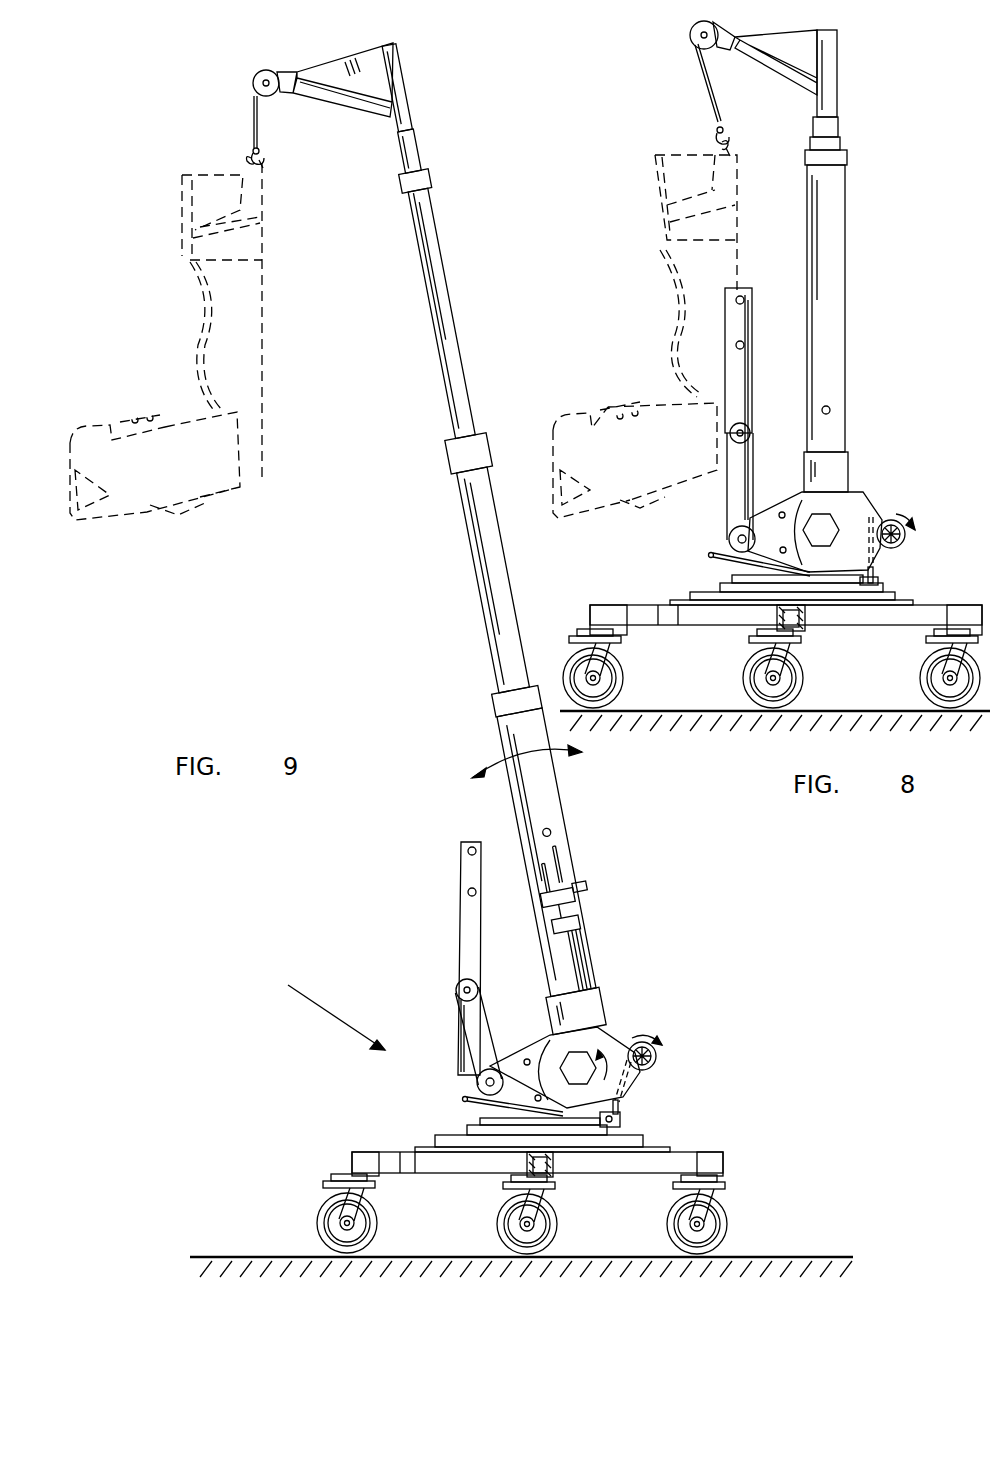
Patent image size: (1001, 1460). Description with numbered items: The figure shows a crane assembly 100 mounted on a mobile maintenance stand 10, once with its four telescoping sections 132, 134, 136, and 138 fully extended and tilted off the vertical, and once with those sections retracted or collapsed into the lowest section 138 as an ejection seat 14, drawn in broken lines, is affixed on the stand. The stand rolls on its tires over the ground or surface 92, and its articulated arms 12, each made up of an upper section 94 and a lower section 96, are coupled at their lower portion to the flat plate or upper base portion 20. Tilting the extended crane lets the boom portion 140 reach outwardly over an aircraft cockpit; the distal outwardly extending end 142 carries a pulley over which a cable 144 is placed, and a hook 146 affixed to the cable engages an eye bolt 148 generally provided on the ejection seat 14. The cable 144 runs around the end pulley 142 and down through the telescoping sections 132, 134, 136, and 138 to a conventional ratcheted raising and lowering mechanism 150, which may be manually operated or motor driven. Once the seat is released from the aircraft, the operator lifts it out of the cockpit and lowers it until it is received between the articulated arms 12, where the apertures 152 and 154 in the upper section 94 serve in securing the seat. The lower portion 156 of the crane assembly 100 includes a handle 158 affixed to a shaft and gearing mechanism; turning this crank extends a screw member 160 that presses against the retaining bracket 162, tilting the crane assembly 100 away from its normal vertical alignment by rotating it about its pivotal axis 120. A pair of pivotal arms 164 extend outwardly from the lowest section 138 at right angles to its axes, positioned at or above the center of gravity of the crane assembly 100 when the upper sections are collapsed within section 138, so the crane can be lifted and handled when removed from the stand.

In FIG. 8, the mobile maintenance stand 10 is at (685, 578).
In FIG. 9, the articulated arms 12 is at (443, 957).
In FIG. 8, the articulated arms 12 is at (762, 395).
In FIG. 9, the ejection seat 14 is at (240, 380).
In FIG. 8, the ejection seat 14 is at (680, 350).
In FIG. 9, the upper base portion 20 is at (440, 1147).
In FIG. 9, the ground or surface 92 is at (362, 1262).
In FIG. 8, the ground or surface 92 is at (698, 714).
In FIG. 9, the upper section 94 is at (462, 873).
In FIG. 8, the upper section 94 is at (752, 322).
In FIG. 9, the lower section 96 is at (455, 965).
In FIG. 8, the lower section 96 is at (752, 420).
In FIG. 9, the crane assembly 100 is at (482, 667).
In FIG. 8, the crane assembly 100 is at (862, 481).
In FIG. 9, the pivotal axis 120 is at (477, 1082).
In FIG. 8, the pivotal axis 120 is at (742, 539).
In FIG. 9, the telescoping section 132 is at (404, 103).
In FIG. 8, the telescoping section 132 is at (832, 70).
In FIG. 9, the telescoping section 134 is at (424, 258).
In FIG. 8, the telescoping section 134 is at (840, 127).
In FIG. 9, the telescoping section 136 is at (480, 535).
In FIG. 8, the telescoping section 136 is at (845, 150).
In FIG. 9, the lowest section 138 is at (548, 802).
In FIG. 8, the lowest section 138 is at (838, 220).
In FIG. 9, the boom portion 140 is at (328, 58).
In FIG. 8, the boom portion 140 is at (788, 45).
In FIG. 9, the end pulley 142 is at (256, 80).
In FIG. 8, the end pulley 142 is at (696, 44).
In FIG. 9, the cable 144 is at (252, 127).
In FIG. 8, the cable 144 is at (714, 95).
In FIG. 9, the hook 146 is at (262, 154).
In FIG. 8, the hook 146 is at (716, 142).
In FIG. 9, the eye bolt 148 is at (258, 165).
In FIG. 8, the eye bolt 148 is at (728, 150).
In FIG. 9, the ratcheted raising and lowering mechanism 150 is at (580, 893).
In FIG. 9, the aperture 152 is at (468, 851).
In FIG. 8, the aperture 152 is at (744, 300).
In FIG. 9, the aperture 154 is at (468, 895).
In FIG. 8, the aperture 154 is at (744, 346).
In FIG. 9, the lower portion 156 is at (612, 1034).
In FIG. 8, the lower portion 156 is at (880, 512).
In FIG. 9, the handle 158 is at (658, 1062).
In FIG. 8, the handle 158 is at (904, 542).
In FIG. 9, the screw member 160 is at (627, 1105).
In FIG. 8, the screw member 160 is at (882, 578).
In FIG. 9, the retaining bracket 162 is at (622, 1118).
In FIG. 8, the retaining bracket 162 is at (882, 585).
In FIG. 9, the pivotal arms 164 is at (552, 834).
In FIG. 8, the pivotal arms 164 is at (831, 410).